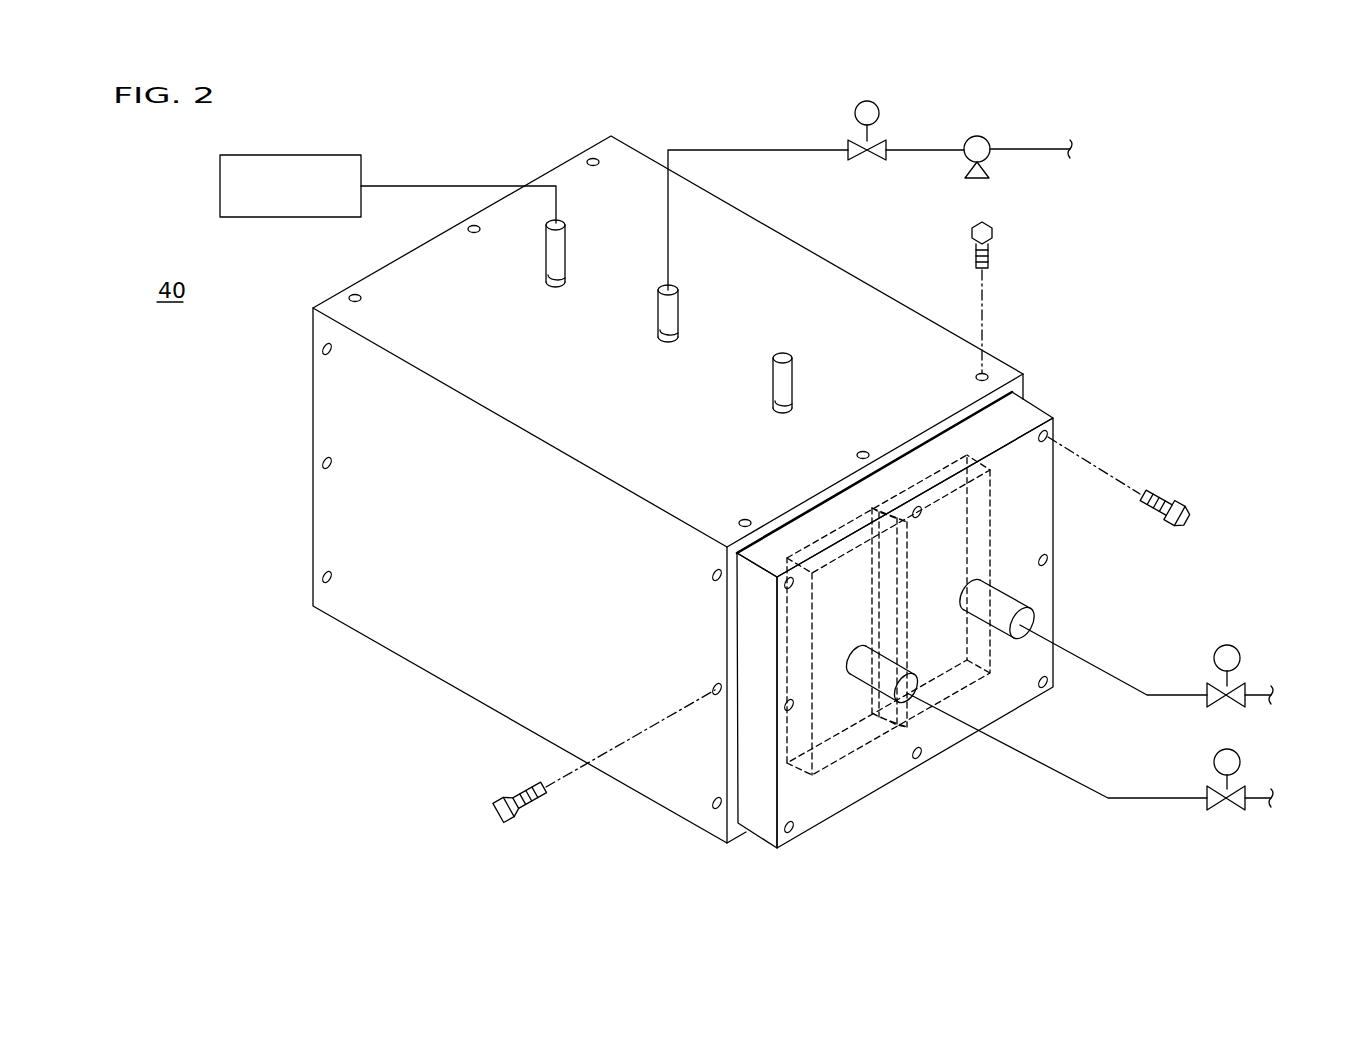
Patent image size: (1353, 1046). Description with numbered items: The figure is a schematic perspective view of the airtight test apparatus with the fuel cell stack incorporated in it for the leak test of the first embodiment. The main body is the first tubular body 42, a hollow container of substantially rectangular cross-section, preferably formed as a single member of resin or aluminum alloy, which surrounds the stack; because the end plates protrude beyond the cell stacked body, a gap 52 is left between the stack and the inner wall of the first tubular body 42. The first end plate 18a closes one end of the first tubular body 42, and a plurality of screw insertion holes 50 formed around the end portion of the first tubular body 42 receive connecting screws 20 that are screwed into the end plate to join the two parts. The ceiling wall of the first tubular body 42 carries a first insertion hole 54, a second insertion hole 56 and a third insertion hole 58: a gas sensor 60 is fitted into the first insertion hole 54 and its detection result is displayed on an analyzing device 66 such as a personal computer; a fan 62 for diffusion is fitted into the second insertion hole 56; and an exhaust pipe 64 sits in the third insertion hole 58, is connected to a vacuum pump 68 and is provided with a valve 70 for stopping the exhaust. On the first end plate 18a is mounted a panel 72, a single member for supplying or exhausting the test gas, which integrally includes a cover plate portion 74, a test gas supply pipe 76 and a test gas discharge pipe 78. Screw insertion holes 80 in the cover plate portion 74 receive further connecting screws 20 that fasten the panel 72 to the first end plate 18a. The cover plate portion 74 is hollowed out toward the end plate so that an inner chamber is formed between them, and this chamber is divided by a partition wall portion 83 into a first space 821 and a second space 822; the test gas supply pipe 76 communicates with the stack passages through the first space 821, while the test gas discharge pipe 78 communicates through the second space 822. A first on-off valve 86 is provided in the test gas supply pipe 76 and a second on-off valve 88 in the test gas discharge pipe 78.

The first tubular body 42 is at (430, 646).
The gap 52 is at (365, 397).
The first end plate 18a is at (703, 788).
The screw insertion holes 50 is at (714, 582).
The connecting screws 20 is at (995, 233).
The first insertion hole 54 is at (546, 268).
The second insertion hole 56 is at (773, 398).
The third insertion hole 58 is at (658, 325).
The gas sensor 60 is at (566, 238).
The fan 62 is at (793, 377).
The exhaust pipe 64 is at (680, 310).
The analyzing device 66 is at (300, 155).
The vacuum pump 68 is at (982, 137).
The valve 70 is at (855, 105).
The panel 72 is at (1066, 571).
The cover plate portion 74 is at (863, 778).
The test gas supply pipe 76 is at (858, 665).
The test gas discharge pipe 78 is at (1007, 607).
The screw insertion holes 80 is at (1050, 434).
The first space 821 is at (838, 747).
The second space 822 is at (945, 537).
The partition wall portion 83 is at (887, 611).
The first on-off valve 86 is at (1238, 752).
The second on-off valve 88 is at (1238, 648).